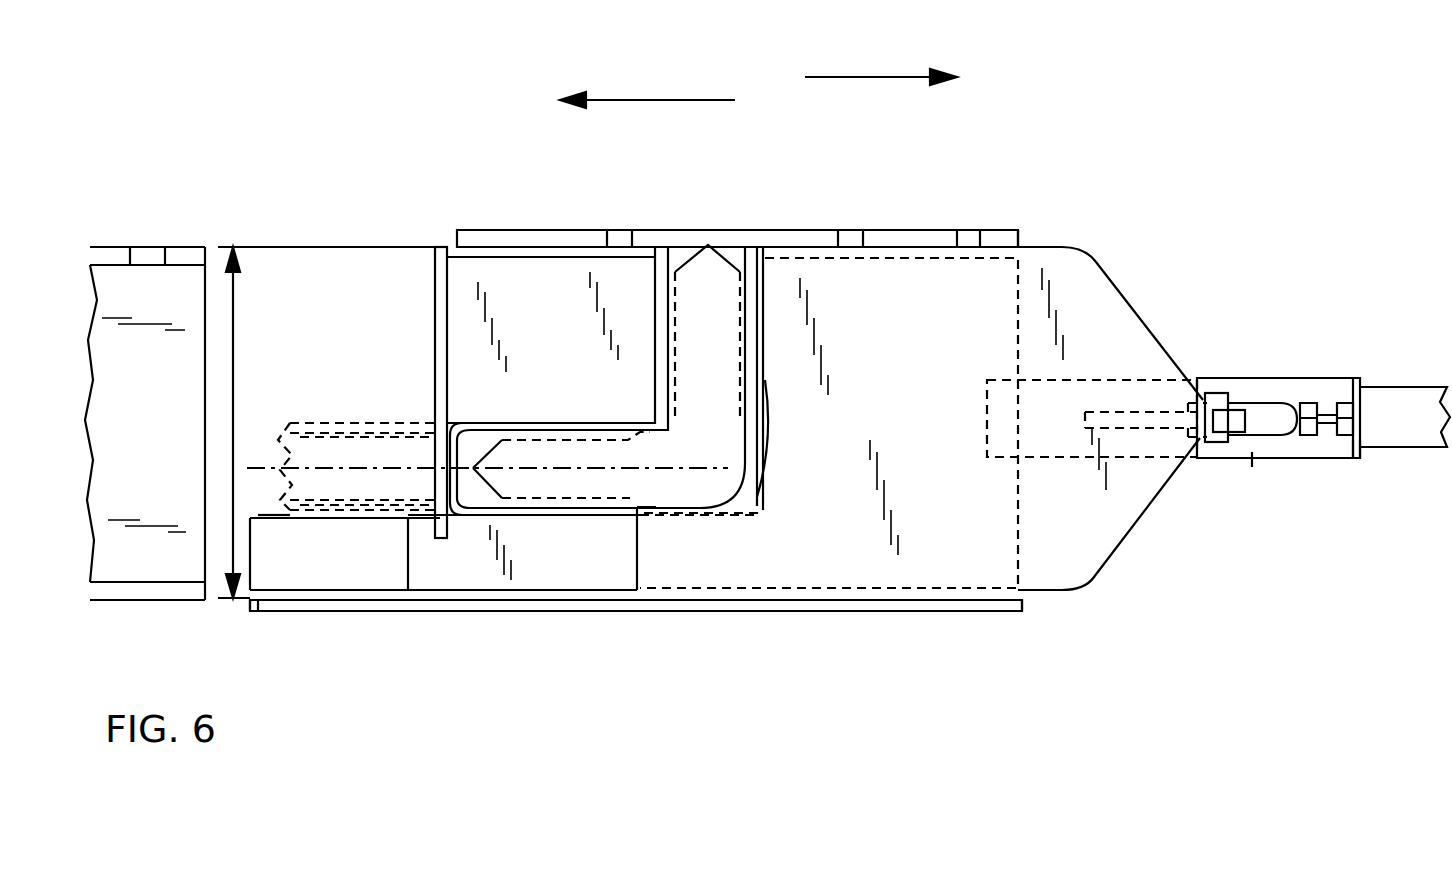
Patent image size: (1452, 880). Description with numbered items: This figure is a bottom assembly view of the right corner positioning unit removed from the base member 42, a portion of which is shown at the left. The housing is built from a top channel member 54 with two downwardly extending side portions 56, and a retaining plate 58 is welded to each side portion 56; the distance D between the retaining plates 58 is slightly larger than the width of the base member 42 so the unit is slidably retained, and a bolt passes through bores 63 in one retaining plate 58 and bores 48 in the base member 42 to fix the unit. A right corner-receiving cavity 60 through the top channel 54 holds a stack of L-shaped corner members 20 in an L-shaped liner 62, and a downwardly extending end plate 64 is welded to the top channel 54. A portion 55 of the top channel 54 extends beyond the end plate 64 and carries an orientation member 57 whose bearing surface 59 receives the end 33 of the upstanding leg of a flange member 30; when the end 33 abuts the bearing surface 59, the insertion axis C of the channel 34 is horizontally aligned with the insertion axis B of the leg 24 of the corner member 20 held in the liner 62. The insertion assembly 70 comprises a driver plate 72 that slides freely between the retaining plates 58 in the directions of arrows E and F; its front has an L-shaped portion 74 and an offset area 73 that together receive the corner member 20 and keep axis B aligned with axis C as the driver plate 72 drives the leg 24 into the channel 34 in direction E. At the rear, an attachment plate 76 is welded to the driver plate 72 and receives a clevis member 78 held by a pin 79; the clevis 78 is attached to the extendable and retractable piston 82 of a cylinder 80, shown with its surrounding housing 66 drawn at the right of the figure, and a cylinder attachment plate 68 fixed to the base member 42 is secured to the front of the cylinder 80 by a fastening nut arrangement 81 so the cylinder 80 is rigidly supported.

The L-shaped corner member 20 is at (760, 245).
The leg portion 24 is at (598, 432).
The flange member 30 is at (368, 420).
The end of upstanding leg portion 33 is at (370, 508).
The channel 34 is at (310, 437).
The base member 42 is at (168, 415).
The bores 48 is at (163, 250).
The top channel member 54 is at (539, 320).
The portion of the top channel 55 is at (258, 612).
The side portion 56 is at (458, 247).
The orientation member 57 is at (339, 570).
The retaining plate 58 is at (1010, 240).
The bearing surface 59 is at (262, 515).
The right corner-receiving cavity 60 is at (704, 248).
The liner 62 is at (660, 250).
The bores 63 is at (977, 235).
The end plate 64 is at (433, 322).
The housing 66 is at (1253, 458).
The cylinder attachment plate 68 is at (1360, 455).
The insertion assembly 70 is at (1150, 541).
The driver plate 72 is at (920, 397).
The offset area 73 is at (770, 395).
The L-shaped portion 74 is at (734, 570).
The attachment plate 76 is at (1113, 410).
The clevis member 78 is at (1257, 402).
The pin 79 is at (1212, 393).
The cylinder 80 is at (1419, 427).
The fastening nut arrangement 81 is at (1345, 458).
The piston 82 is at (1327, 403).
The insertion axis of leg B is at (508, 462).
The insertion axis of channel C is at (262, 468).
The distance between retaining plates D is at (240, 335).
The insertion direction arrow E is at (702, 102).
The return direction arrow F is at (858, 77).